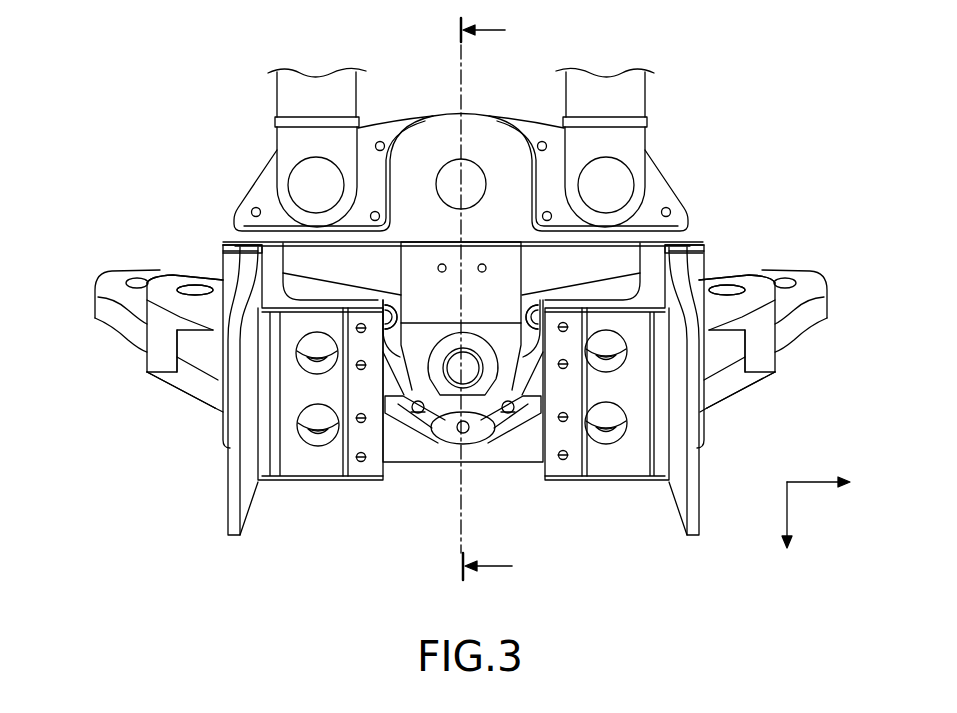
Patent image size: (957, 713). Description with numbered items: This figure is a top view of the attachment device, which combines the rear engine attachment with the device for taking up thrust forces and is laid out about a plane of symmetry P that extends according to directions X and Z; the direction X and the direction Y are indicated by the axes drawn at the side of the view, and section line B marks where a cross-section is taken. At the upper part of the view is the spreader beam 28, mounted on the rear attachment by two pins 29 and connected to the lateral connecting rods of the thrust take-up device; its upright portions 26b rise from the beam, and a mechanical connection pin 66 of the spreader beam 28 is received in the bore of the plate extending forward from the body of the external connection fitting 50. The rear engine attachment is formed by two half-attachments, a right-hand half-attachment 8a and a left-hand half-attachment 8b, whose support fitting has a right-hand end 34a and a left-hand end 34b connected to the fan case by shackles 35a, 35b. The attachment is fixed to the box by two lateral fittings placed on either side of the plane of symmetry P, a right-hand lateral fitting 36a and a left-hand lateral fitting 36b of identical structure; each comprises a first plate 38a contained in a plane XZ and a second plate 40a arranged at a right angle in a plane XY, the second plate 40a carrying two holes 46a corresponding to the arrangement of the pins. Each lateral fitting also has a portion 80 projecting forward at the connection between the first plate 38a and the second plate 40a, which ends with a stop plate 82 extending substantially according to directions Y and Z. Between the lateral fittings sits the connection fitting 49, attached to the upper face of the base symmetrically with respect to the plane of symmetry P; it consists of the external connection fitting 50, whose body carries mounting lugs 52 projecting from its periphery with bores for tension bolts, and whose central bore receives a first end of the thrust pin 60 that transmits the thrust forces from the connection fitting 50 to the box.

The right-hand half-attachment 8a is at (164, 410).
The left-hand half-attachment 8b is at (773, 390).
The upright portion 26b is at (288, 85).
The spreader beam 28 is at (539, 106).
The pin 29 is at (310, 175).
The right-hand end 34a is at (200, 278).
The left-hand end 34b is at (740, 278).
The shackle 35a is at (108, 280).
The shackle 35b is at (828, 278).
The right-hand lateral fitting 36a is at (303, 524).
The left-hand lateral fitting 36b is at (620, 490).
The first plate 38a is at (230, 520).
The second plate 40a is at (330, 462).
The hole 46a is at (307, 444).
The connection fitting 49 is at (447, 460).
The external connection fitting 50 is at (482, 408).
The mounting lug 52 is at (468, 438).
The thrust pin 60 is at (444, 410).
The mechanical connection pin 66 is at (449, 165).
The portion 80 is at (200, 235).
The stop plate 82 is at (250, 242).
The plane of symmetry P is at (463, 83).
The section line B is at (486, 292).
The direction X is at (786, 529).
The direction Y is at (827, 482).